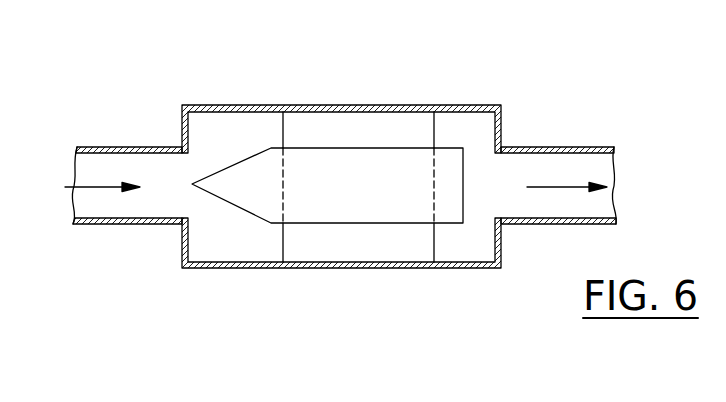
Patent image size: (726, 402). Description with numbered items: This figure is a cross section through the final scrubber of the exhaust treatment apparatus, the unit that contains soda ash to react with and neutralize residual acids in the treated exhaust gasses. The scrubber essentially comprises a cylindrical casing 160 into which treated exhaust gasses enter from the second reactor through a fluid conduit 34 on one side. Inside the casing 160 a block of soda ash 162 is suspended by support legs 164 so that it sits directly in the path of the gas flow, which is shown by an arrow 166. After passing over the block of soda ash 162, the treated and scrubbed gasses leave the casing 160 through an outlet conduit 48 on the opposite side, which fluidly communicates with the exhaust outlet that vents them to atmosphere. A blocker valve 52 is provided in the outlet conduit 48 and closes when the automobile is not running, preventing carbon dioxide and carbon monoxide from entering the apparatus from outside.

The blocker valve 52 is at (248, 81).
The cylindrical casing 160 is at (418, 105).
The fluid conduit 34 is at (127, 148).
The outlet conduit 48 is at (570, 146).
The arrow 166 is at (105, 190).
The block of soda ash 162 is at (367, 210).
The support legs 164 is at (283, 239).